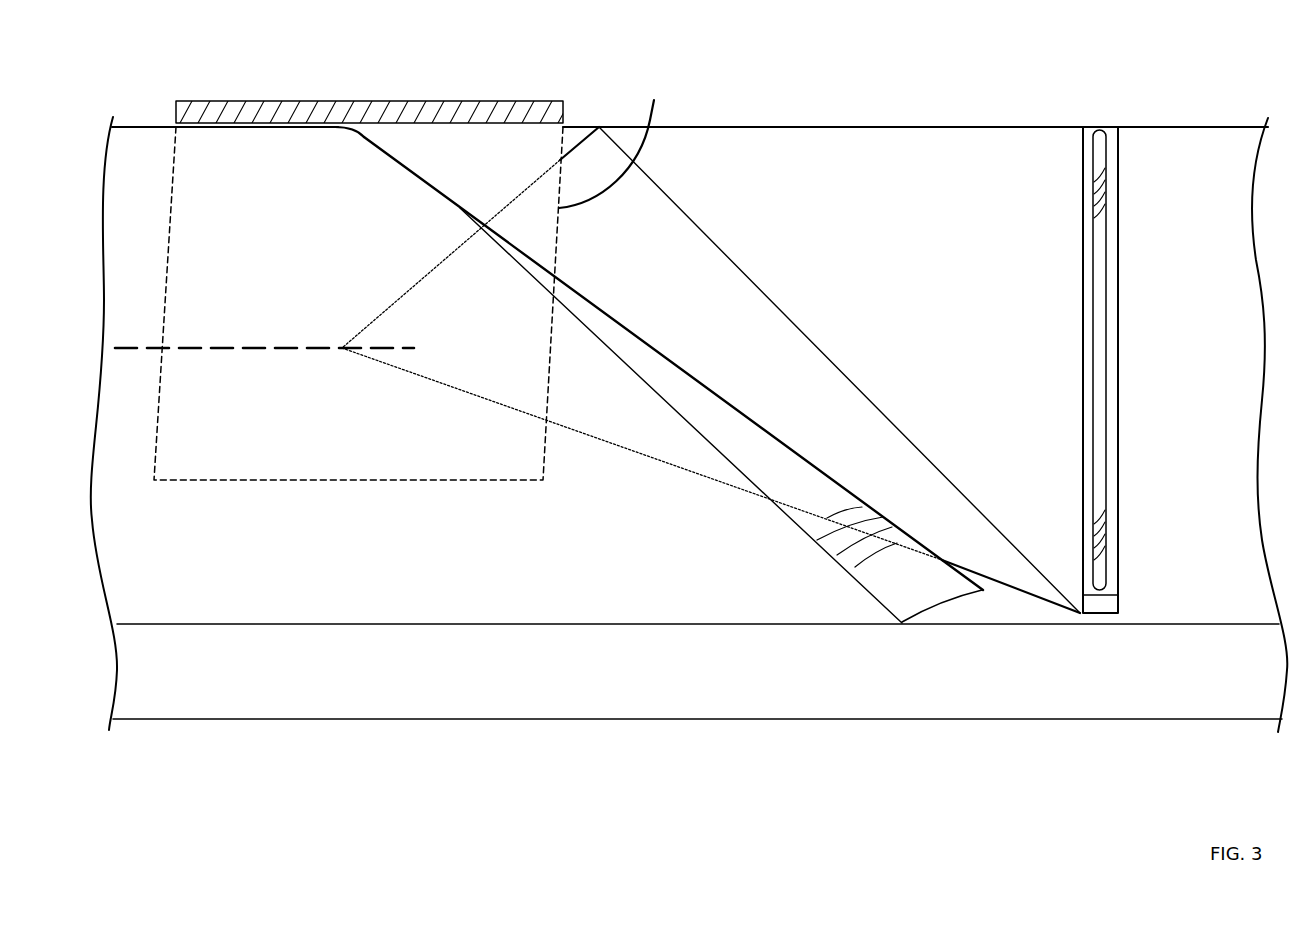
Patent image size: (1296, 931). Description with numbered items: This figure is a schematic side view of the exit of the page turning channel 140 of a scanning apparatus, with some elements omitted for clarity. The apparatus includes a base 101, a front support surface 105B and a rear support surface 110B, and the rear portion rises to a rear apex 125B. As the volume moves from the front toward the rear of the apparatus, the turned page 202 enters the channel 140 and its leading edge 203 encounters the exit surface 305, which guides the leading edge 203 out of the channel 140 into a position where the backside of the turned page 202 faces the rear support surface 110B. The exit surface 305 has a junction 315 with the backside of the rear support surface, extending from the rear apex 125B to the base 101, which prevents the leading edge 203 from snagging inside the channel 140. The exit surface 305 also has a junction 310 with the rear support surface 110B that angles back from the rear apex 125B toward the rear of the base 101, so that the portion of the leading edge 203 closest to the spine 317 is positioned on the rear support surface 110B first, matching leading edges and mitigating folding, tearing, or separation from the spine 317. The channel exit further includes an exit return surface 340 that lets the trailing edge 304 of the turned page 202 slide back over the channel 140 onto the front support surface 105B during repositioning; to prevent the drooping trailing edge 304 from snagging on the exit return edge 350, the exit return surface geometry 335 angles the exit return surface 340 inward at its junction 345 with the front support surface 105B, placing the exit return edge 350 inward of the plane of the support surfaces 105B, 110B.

The base 101 is at (301, 352).
The front support surface 105B is at (150, 558).
The rear support surface 110B is at (1022, 160).
The rear apex 125B is at (1161, 128).
The page turning channel 140 is at (711, 370).
The turned page 202 is at (270, 191).
The leading edge 203 is at (611, 143).
The trailing edge 304 is at (172, 187).
The exit surface 305 is at (699, 295).
The junction 310 is at (810, 338).
The junction 315 is at (543, 173).
The spine 317 is at (245, 115).
The exit return surface geometry 335 is at (833, 547).
The exit return surface 340 is at (900, 593).
The junction 345 is at (687, 423).
The exit return edge 350 is at (797, 457).